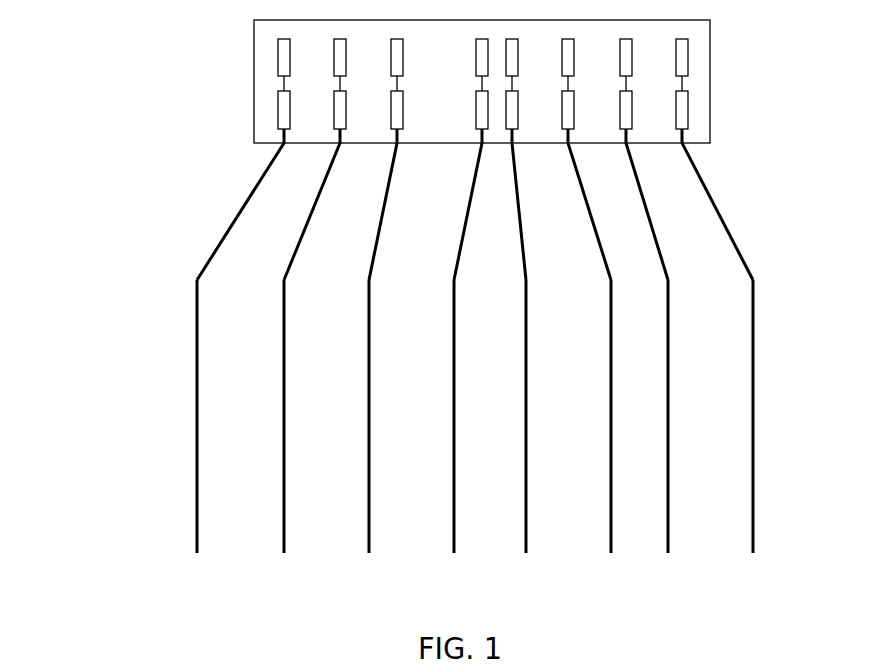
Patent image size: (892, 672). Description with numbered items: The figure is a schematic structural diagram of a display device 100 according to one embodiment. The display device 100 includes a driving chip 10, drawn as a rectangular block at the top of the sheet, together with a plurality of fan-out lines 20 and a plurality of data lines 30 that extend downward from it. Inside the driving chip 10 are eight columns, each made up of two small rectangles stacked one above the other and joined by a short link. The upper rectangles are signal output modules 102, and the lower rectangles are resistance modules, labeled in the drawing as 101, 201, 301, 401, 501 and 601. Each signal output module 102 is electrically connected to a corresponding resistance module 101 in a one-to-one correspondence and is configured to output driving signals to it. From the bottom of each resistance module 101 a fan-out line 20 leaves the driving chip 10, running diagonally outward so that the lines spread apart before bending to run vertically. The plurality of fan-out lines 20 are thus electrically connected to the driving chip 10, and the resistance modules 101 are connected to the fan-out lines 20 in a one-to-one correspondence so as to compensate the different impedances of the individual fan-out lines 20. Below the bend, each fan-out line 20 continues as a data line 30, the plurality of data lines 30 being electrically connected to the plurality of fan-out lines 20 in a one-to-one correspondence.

The display device 100 is at (155, 63).
The driving chip 10 is at (710, 82).
The signal output module 102 is at (278, 60).
The resistance module 101 is at (278, 115).
The first pad 201 is at (340, 110).
The first pad 301 is at (397, 110).
The first pad 401 is at (482, 110).
The first pad 501 is at (512, 110).
The first pad 601 is at (625, 110).
The fan-out line 20 is at (228, 232).
The data line 30 is at (197, 437).